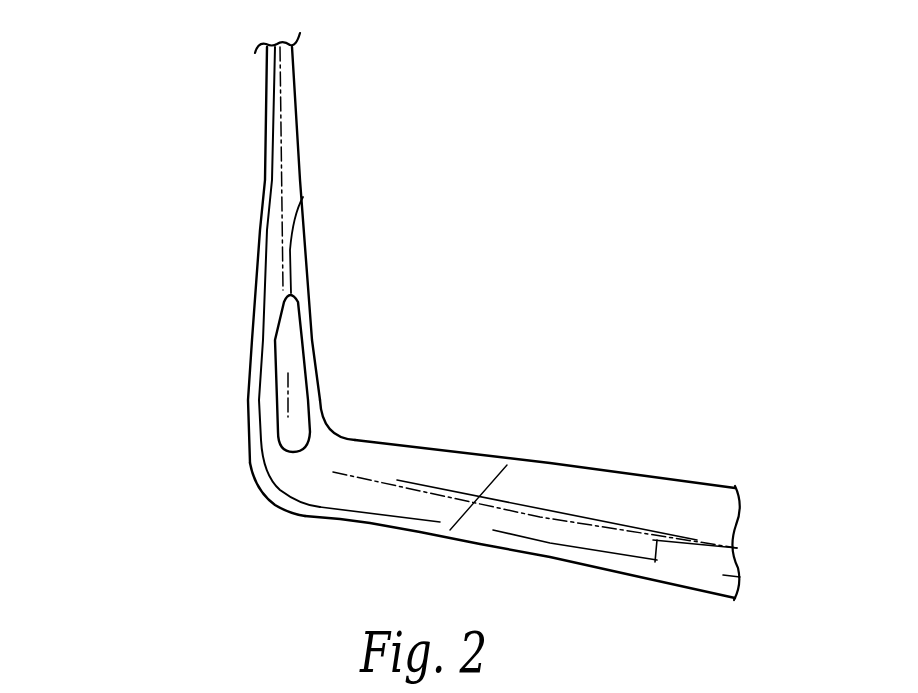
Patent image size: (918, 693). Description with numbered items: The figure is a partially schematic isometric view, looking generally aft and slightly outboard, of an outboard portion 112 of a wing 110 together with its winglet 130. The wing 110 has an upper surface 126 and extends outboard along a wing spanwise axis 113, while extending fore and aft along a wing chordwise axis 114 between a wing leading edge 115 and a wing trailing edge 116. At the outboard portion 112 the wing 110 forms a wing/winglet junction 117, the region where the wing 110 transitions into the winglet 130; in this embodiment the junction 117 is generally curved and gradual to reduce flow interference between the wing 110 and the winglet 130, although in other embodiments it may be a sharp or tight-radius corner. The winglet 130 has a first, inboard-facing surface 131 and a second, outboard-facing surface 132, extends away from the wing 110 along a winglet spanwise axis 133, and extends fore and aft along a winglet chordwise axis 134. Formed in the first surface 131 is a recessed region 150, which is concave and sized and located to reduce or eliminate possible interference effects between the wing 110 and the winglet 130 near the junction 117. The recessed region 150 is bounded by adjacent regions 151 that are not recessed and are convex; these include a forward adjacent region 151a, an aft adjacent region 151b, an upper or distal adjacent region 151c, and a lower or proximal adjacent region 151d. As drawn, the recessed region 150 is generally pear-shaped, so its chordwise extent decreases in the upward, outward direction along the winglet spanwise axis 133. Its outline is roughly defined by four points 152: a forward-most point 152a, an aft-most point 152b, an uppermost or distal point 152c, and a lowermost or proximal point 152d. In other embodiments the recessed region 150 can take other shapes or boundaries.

The wing 110 is at (577, 538).
The outboard portion 112 is at (510, 425).
The wing spanwise axis 113 is at (657, 577).
The wing chordwise axis 114 is at (497, 478).
The wing leading edge 115 is at (417, 533).
The wing trailing edge 116 is at (662, 500).
The wing/winglet junction 117 is at (345, 441).
The upper surface 126 is at (693, 517).
The winglet 130 is at (287, 67).
The first surface 131 is at (290, 110).
The second surface 132 is at (267, 91).
The winglet spanwise axis 133 is at (257, 373).
The winglet chordwise axis 134 is at (272, 297).
The recessed region 150 is at (312, 360).
The adjacent regions 151 is at (238, 341).
The forward adjacent region 151a is at (268, 430).
The aft adjacent region 151b is at (335, 428).
The upper or distal adjacent region 151c is at (255, 312).
The lower or proximal adjacent region 151d is at (308, 460).
The points 152 is at (198, 471).
The forward-most point 152a is at (272, 398).
The aft-most point 152b is at (320, 400).
The uppermost or distal point 152c is at (303, 197).
The lowermost or proximal point 152d is at (275, 478).